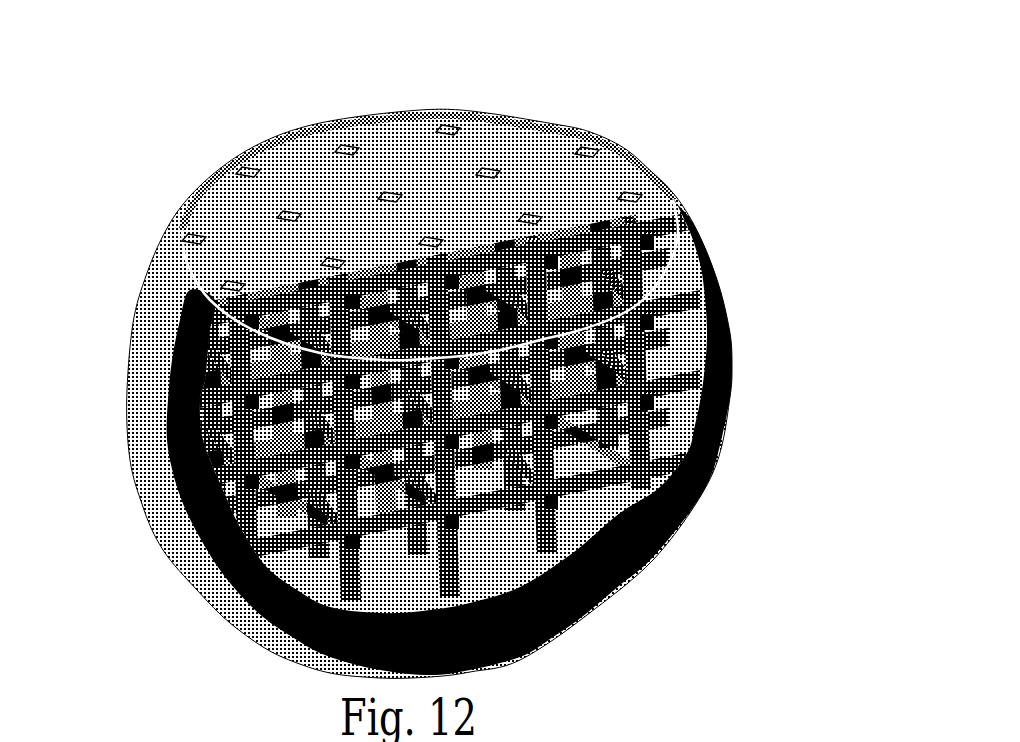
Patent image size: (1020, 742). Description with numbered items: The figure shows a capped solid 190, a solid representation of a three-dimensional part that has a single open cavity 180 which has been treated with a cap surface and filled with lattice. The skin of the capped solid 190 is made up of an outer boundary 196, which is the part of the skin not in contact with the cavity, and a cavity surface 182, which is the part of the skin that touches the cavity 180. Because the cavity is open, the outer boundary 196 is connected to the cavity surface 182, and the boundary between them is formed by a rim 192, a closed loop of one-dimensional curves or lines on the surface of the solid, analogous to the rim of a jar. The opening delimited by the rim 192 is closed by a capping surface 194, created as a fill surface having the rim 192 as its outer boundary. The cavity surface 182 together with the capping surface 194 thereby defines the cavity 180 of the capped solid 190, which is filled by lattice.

The cavity 180 is at (592, 437).
The cavity surface 182 is at (505, 570).
The capped solid 190 is at (772, 349).
The rim 192 is at (667, 195).
The capping surface 194 is at (505, 143).
The outer boundary 196 is at (142, 452).